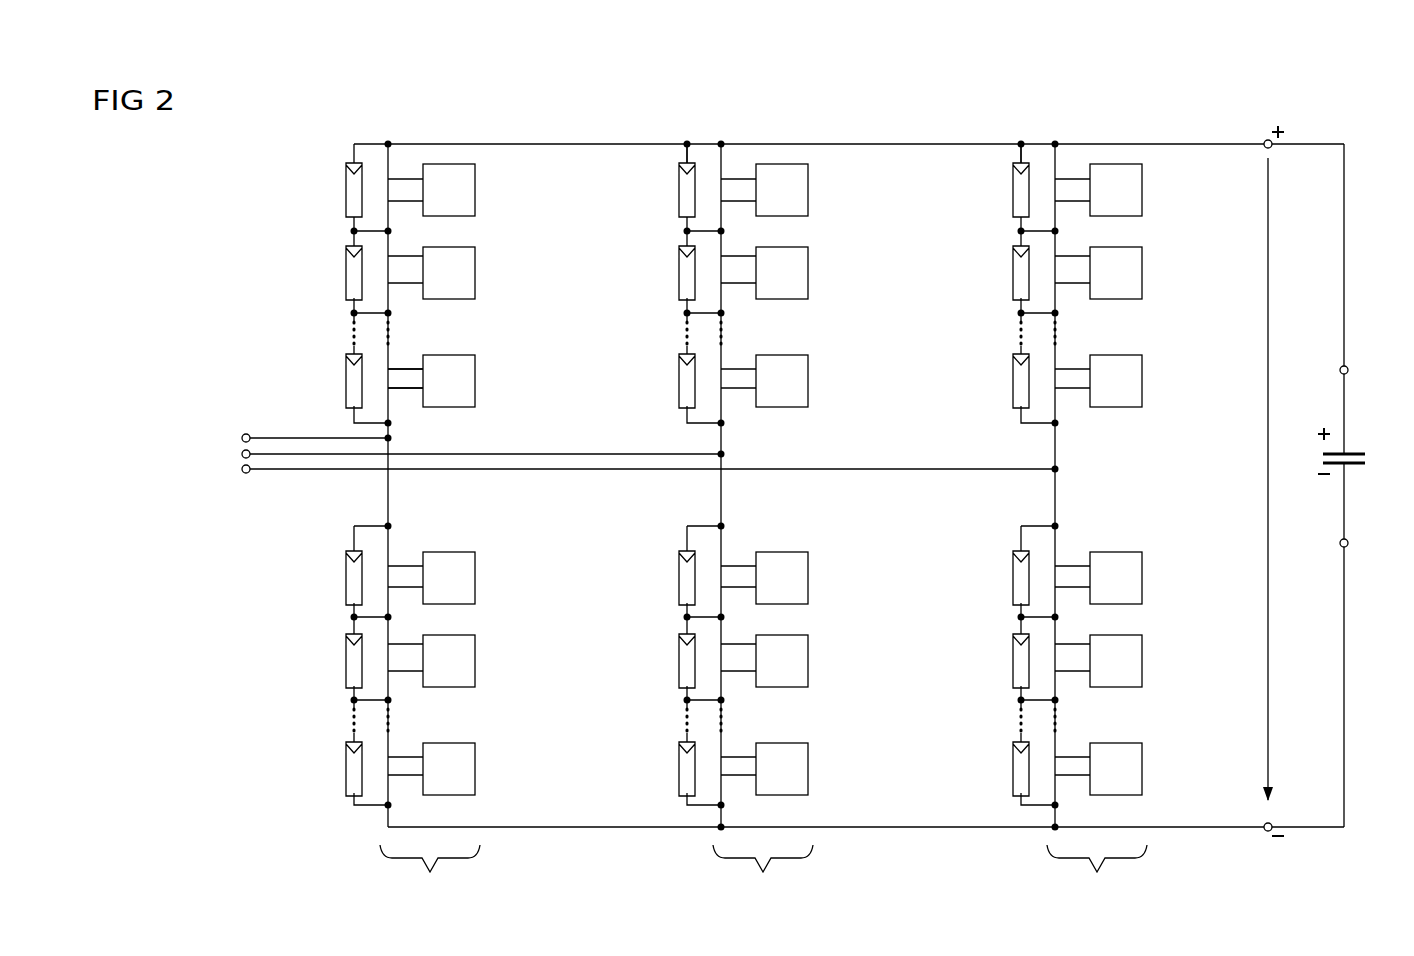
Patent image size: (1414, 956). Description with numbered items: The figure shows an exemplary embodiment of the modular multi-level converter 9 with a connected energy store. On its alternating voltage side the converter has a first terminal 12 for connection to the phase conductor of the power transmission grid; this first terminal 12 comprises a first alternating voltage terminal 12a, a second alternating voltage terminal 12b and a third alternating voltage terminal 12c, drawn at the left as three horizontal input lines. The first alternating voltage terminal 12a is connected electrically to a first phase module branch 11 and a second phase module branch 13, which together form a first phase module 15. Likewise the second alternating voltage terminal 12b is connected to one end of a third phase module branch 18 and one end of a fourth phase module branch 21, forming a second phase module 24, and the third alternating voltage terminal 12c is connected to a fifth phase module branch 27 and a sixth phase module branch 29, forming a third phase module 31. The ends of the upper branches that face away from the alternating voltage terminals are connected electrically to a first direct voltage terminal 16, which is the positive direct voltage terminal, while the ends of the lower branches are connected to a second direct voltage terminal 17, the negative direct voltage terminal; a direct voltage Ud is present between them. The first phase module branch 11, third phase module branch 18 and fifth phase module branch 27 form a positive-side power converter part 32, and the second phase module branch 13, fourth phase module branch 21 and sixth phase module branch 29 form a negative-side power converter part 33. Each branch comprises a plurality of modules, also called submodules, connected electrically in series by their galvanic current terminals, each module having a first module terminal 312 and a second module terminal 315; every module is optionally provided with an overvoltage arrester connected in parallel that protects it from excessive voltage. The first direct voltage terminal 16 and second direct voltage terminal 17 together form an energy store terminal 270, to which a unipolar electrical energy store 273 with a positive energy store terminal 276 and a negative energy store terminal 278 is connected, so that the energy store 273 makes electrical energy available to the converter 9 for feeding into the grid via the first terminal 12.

The modular multi-level converter 9 is at (960, 108).
The first phase module branch 11 is at (403, 248).
The third phase module branch 18 is at (736, 245).
The fifth phase module branch 27 is at (1070, 245).
The second phase module branch 13 is at (403, 640).
The fourth phase module branch 21 is at (736, 640).
The sixth phase module branch 29 is at (1070, 640).
The first terminal 12 is at (156, 433).
The first alternating voltage terminal 12a is at (242, 438).
The second alternating voltage terminal 12b is at (242, 454).
The third alternating voltage terminal 12c is at (242, 470).
The first phase module 15 is at (430, 877).
The second phase module 24 is at (763, 877).
The third phase module 31 is at (1097, 877).
The first direct voltage terminal 16 is at (1181, 143).
The second direct voltage terminal 17 is at (1198, 829).
The energy store terminal 270 is at (1268, 829).
The electrical energy store 273 is at (1350, 452).
The positive energy store terminal 276 is at (1346, 368).
The negative energy store terminal 278 is at (1347, 541).
The first module terminal 312 is at (403, 372).
The second module terminal 315 is at (403, 388).
The positive-side power converter part 32 is at (235, 246).
The negative-side power converter part 33 is at (235, 631).
The direct voltage Ud is at (1283, 479).